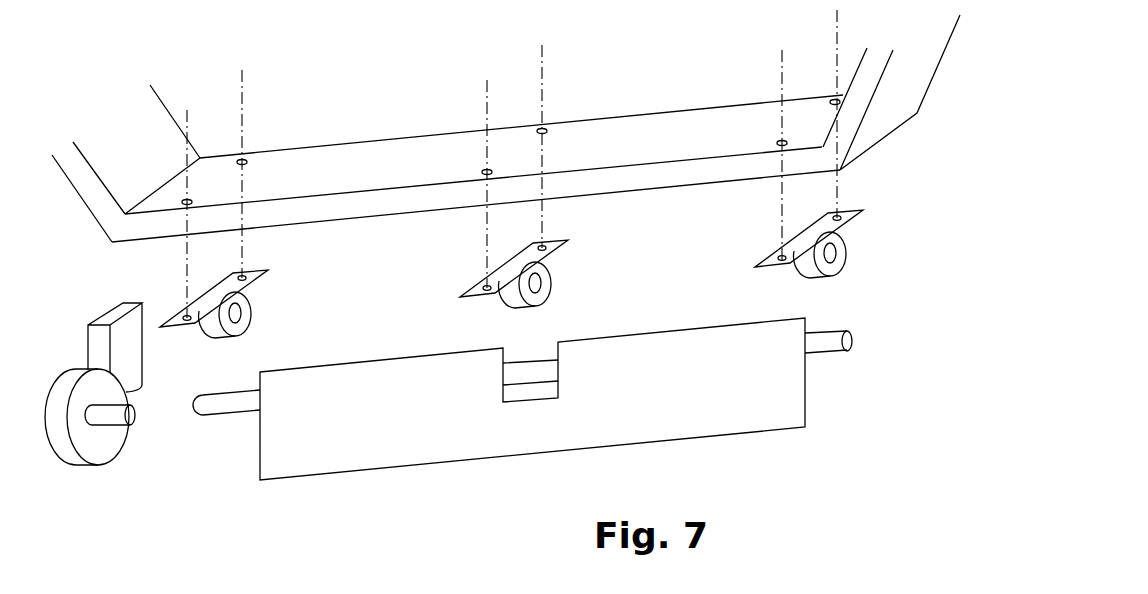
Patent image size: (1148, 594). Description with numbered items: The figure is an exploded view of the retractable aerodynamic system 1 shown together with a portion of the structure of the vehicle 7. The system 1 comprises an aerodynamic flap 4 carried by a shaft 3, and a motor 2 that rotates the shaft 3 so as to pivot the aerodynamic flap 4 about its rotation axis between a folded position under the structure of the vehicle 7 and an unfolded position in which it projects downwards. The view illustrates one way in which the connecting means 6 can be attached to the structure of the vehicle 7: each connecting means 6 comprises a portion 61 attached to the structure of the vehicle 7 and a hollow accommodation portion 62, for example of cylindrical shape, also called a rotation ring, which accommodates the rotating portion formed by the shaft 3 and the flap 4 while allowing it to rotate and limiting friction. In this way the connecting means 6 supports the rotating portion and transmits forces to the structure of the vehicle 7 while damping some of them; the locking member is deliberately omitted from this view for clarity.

The retractable aerodynamic system 1 is at (121, 108).
The structure of the vehicle 7 is at (389, 122).
The connecting means 6 is at (514, 264).
The portion attached to the structure of the vehicle 61 is at (256, 270).
The hollow accommodation portion 62 is at (245, 313).
The motor 2 is at (123, 462).
The shaft 3 is at (222, 421).
The aerodynamic flap 4 is at (762, 435).